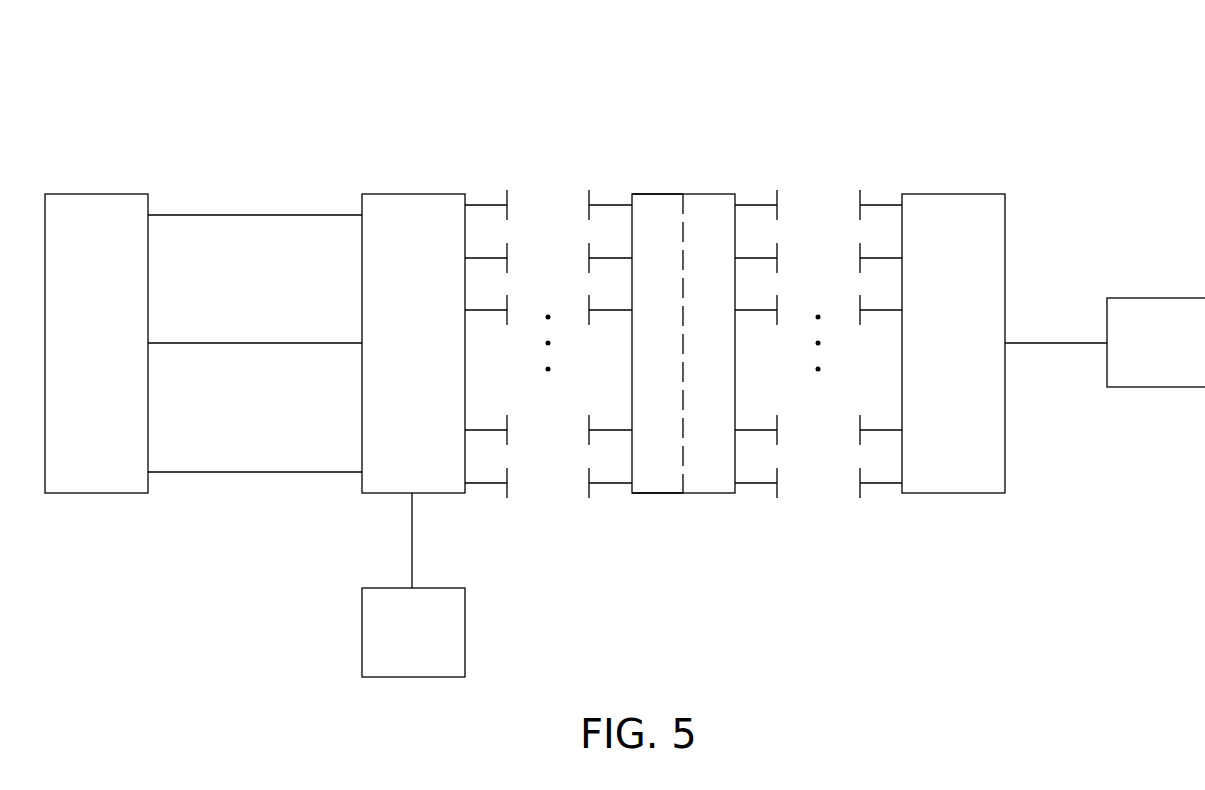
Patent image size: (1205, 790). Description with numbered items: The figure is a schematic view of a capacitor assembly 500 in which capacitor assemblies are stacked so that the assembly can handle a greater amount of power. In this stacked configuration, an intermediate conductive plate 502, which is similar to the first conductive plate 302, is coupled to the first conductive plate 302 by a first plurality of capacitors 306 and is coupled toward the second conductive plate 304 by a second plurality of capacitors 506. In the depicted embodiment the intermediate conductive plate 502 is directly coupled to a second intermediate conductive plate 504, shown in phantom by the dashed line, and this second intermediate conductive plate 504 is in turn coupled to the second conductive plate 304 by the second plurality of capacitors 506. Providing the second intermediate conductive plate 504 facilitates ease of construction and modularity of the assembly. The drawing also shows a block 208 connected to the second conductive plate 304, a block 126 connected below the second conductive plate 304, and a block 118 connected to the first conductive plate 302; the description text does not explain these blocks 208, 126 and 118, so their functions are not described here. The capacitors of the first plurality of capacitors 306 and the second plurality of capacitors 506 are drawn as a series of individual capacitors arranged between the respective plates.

The capacitor assembly 500 is at (747, 57).
The processor / controller 208 is at (75, 353).
The second conductive plate 304 is at (392, 353).
The second plurality of capacitors 506 is at (564, 139).
The second intermediate conductive plate 504 is at (653, 493).
The intermediate conductive plate 502 is at (713, 493).
The first plurality of capacitors 306 is at (819, 139).
The first conductive plate 302 is at (932, 353).
The output / display 118 is at (1138, 353).
The memory 126 is at (393, 640).